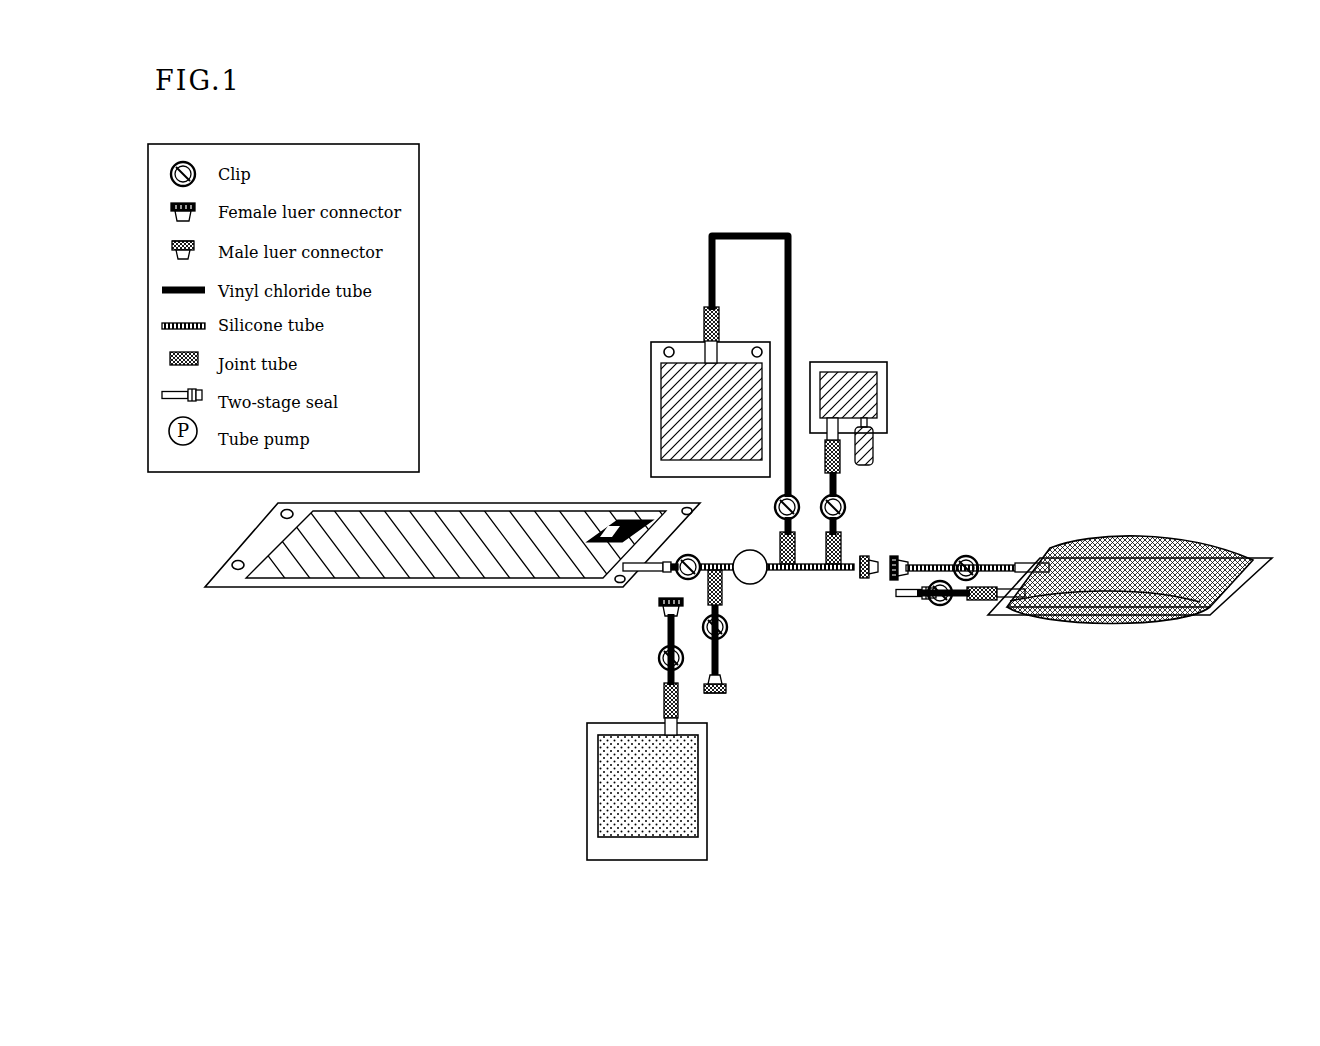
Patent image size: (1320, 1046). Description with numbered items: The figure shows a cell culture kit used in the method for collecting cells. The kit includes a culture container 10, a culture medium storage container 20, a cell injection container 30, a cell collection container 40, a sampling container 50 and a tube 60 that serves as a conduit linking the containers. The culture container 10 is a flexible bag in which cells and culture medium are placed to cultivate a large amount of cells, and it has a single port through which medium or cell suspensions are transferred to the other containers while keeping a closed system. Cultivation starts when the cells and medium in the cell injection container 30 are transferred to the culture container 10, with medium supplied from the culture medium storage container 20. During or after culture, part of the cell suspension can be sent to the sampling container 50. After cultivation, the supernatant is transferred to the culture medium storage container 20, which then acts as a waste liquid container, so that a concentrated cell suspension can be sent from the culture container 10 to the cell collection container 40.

The culture container 10 is at (282, 542).
The culture medium storage container 20 is at (1158, 536).
The cell injection container 30 is at (707, 785).
The cell collection container 40 is at (676, 342).
The sampling container 50 is at (860, 362).
The tube 60 is at (810, 571).